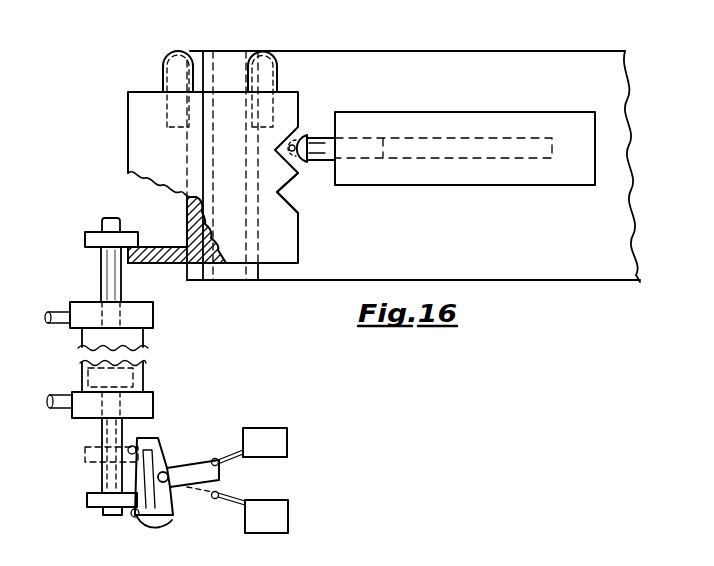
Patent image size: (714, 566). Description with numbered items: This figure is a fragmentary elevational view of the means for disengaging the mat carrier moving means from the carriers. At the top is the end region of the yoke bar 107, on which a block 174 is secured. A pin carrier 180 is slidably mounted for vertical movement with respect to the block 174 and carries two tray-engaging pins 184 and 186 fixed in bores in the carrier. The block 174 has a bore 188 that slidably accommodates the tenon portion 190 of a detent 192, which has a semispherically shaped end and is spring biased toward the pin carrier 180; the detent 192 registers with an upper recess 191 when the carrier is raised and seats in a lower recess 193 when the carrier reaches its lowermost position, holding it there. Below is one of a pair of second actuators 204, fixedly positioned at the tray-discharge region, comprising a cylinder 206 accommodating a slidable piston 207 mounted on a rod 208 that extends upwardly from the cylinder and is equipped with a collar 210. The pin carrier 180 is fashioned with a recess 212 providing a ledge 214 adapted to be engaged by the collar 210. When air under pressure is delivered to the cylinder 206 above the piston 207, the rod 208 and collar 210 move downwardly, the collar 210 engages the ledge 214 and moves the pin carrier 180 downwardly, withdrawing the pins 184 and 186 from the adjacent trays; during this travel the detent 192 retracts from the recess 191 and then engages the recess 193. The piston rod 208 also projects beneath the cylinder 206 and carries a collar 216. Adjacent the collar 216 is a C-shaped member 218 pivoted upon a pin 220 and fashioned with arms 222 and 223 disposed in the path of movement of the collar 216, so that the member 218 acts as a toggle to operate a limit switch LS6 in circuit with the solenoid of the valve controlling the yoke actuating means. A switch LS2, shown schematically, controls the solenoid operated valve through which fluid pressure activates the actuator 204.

The yoke bar 107 is at (462, 48).
The block 174 is at (545, 112).
The pin carrier 180 is at (130, 92).
The tray-engaging pin 184 is at (282, 58).
The tray-engaging pin 186 is at (167, 63).
The bore 188 is at (430, 135).
The tenon portion 190 is at (322, 160).
The recess 191 is at (290, 200).
The detent 192 is at (293, 141).
The recess 193 is at (283, 138).
The second actuator 204 is at (80, 300).
The cylinder 206 is at (82, 338).
The piston 207 is at (88, 373).
The rod 208 is at (101, 263).
The collar 210 is at (95, 232).
The recess 212 is at (158, 194).
The ledge 214 is at (168, 246).
The collar 216 is at (87, 498).
The C-shaped member 218 is at (170, 448).
The pin 220 is at (168, 472).
The arm 222 is at (140, 437).
The arm 223 is at (160, 525).
The limit switch LS6 is at (282, 428).
The switch LS2 is at (285, 500).